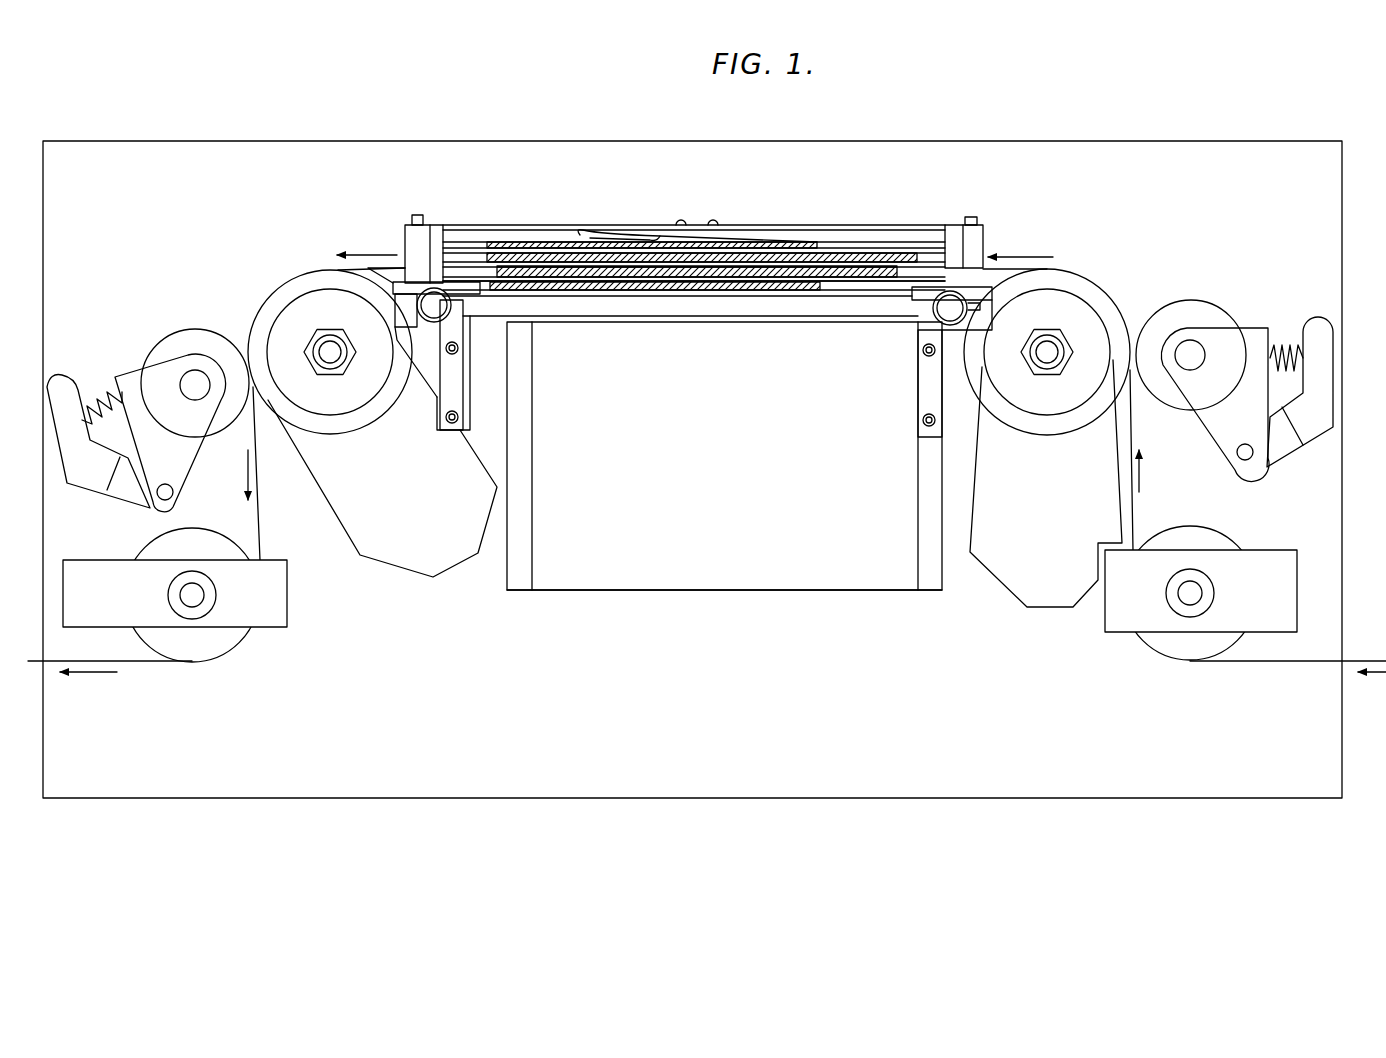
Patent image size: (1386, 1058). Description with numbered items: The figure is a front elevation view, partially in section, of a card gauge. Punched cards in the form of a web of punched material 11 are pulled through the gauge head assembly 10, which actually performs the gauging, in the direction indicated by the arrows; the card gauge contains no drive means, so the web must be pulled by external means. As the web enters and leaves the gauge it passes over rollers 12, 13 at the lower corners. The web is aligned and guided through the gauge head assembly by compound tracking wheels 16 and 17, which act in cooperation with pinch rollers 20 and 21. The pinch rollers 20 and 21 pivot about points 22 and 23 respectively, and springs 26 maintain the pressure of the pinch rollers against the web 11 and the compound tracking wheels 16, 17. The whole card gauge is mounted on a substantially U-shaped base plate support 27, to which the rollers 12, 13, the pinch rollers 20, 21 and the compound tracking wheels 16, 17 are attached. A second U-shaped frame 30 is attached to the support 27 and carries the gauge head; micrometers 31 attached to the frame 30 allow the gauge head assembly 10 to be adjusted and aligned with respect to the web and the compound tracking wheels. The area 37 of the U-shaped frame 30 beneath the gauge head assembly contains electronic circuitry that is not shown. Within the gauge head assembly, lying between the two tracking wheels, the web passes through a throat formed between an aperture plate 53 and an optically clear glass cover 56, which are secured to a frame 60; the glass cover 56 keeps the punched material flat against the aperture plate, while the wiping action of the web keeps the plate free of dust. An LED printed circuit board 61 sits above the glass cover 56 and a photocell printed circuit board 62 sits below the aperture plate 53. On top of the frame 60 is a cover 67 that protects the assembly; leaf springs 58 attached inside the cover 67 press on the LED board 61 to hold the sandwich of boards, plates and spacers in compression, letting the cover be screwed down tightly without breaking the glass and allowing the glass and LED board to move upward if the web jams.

The gauge head assembly 10 is at (713, 250).
The web of punched material 11 is at (260, 515).
The roller 12 is at (1227, 538).
The roller 13 is at (150, 540).
The compound tracking wheel 16 is at (1090, 280).
The compound tracking wheel 17 is at (290, 283).
The pinch roller 20 is at (1202, 297).
The pinch roller 21 is at (185, 327).
The pivot point 22 is at (1249, 460).
The pivot point 23 is at (173, 493).
The spring 26 is at (97, 393).
The U-shaped base plate support 27 is at (398, 800).
The U-shaped frame 30 is at (507, 577).
The micrometer 31 is at (436, 308).
The area 37 is at (702, 593).
The aperture plate 53 is at (763, 263).
The glass cover 56 is at (548, 255).
The leaf spring 58 is at (613, 232).
The frame 60 is at (741, 314).
The LED printed circuit board 61 is at (493, 243).
The photocell printed circuit board 62 is at (853, 280).
The cover 67 is at (490, 223).